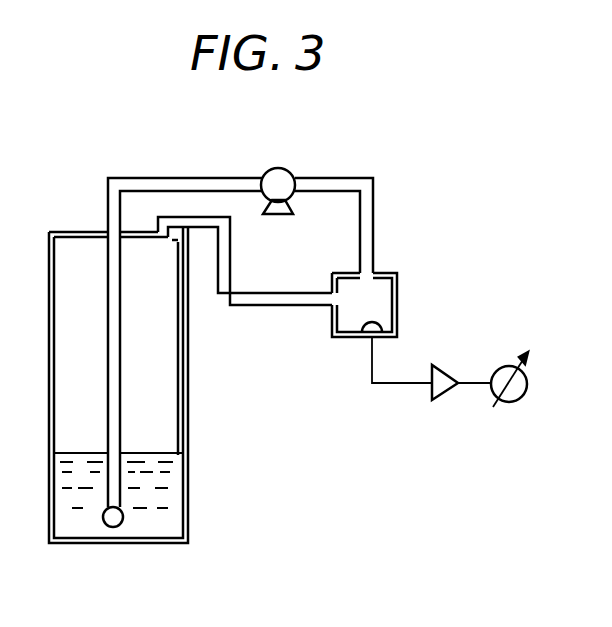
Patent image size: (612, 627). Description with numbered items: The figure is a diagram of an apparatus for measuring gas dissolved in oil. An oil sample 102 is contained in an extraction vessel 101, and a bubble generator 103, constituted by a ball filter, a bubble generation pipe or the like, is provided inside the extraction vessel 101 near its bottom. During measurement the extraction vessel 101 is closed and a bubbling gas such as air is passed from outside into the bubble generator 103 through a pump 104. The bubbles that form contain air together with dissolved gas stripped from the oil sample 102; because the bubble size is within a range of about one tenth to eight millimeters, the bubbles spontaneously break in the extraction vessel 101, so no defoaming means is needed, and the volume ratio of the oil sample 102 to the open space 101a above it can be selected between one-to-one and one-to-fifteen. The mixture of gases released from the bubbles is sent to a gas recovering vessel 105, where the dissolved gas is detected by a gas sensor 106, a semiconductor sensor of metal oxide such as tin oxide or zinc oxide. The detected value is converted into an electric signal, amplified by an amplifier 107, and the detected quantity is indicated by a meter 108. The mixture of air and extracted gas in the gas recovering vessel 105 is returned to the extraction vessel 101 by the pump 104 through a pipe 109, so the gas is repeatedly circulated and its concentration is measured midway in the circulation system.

The extraction vessel 101 is at (154, 385).
The open space 101a is at (214, 347).
The oil sample 102 is at (158, 480).
The bubble generator 103 is at (137, 550).
The pump 104 is at (301, 170).
The gas recovering vessel 105 is at (397, 303).
The gas sensor 106 is at (369, 357).
The amplifier 107 is at (461, 357).
The meter 108 is at (539, 367).
The pipe 109 is at (240, 323).